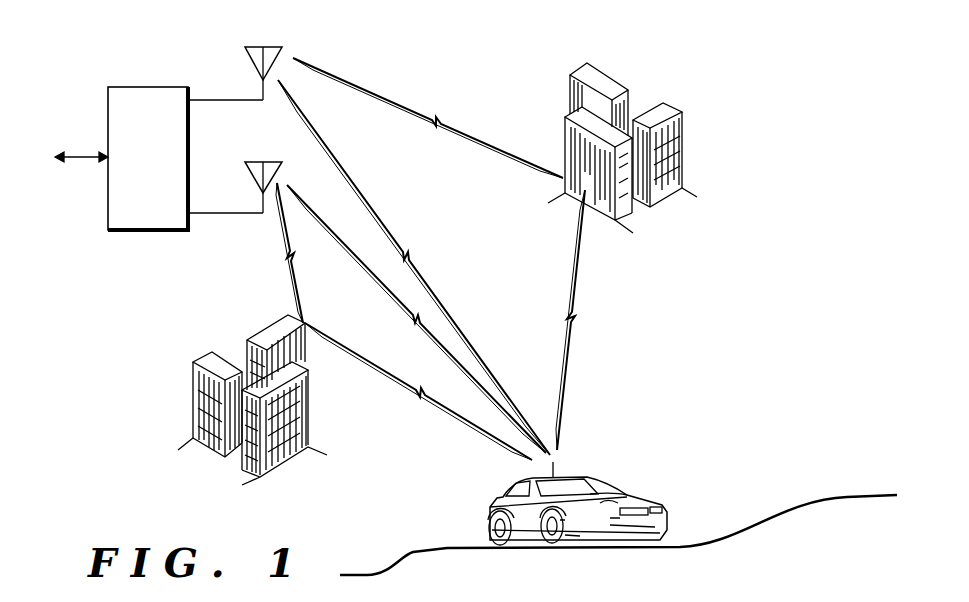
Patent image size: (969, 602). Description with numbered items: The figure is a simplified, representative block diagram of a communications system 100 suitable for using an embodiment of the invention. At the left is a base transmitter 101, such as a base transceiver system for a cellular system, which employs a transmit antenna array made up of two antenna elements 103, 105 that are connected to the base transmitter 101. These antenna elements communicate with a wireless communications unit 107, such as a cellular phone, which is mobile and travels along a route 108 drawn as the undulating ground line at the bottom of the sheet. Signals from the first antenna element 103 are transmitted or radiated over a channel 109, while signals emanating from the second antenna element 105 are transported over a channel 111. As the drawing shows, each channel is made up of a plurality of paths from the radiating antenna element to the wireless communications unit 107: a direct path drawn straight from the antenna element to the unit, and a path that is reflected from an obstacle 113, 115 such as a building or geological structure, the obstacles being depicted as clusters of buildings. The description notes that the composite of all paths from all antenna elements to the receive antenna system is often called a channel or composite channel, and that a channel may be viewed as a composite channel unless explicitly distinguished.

The communications system 100 is at (142, 486).
The base transmitter 101 is at (150, 86).
The antenna element 103 is at (249, 46).
The antenna element 105 is at (249, 161).
The wireless communications unit 107 is at (650, 497).
The route 108 is at (861, 493).
The channel 109 is at (592, 347).
The channel 111 is at (457, 437).
The obstacle 113 is at (257, 336).
The obstacle 115 is at (565, 117).